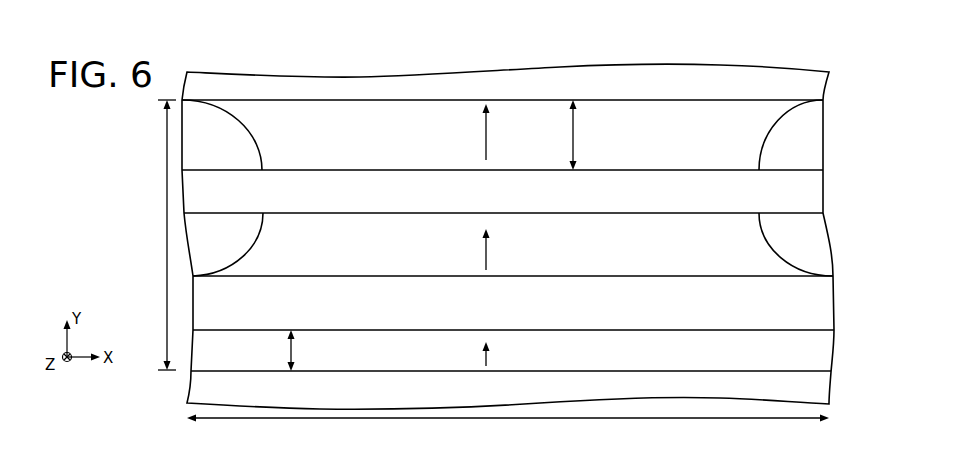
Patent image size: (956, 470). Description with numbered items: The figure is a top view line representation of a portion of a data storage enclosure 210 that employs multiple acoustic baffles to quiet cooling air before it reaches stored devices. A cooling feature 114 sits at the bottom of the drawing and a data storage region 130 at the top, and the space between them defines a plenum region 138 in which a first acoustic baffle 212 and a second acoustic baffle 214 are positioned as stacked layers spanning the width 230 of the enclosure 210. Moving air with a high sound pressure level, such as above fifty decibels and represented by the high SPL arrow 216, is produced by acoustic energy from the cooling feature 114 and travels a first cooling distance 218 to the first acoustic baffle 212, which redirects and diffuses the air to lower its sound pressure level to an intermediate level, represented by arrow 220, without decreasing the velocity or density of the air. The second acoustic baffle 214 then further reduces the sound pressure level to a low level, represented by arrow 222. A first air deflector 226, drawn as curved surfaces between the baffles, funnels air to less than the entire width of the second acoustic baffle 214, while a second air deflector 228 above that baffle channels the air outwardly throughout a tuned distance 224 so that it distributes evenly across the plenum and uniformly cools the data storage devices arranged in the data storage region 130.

The data storage enclosure 210 is at (781, 54).
The data storage region 130 is at (680, 89).
The second air deflector 228 is at (236, 127).
The low SPL arrow 222 is at (484, 143).
The tuned distance 224 is at (575, 141).
The second acoustic baffle 214 is at (246, 202).
The plenum region 138 is at (165, 240).
The first air deflector 226 is at (243, 247).
The intermediate SPL arrow 220 is at (484, 248).
The first acoustic baffle 212 is at (246, 312).
The first cooling distance 218 is at (289, 355).
The high SPL arrow 216 is at (484, 361).
The cooling feature 114 is at (334, 400).
The width of the enclosure 230 is at (508, 430).